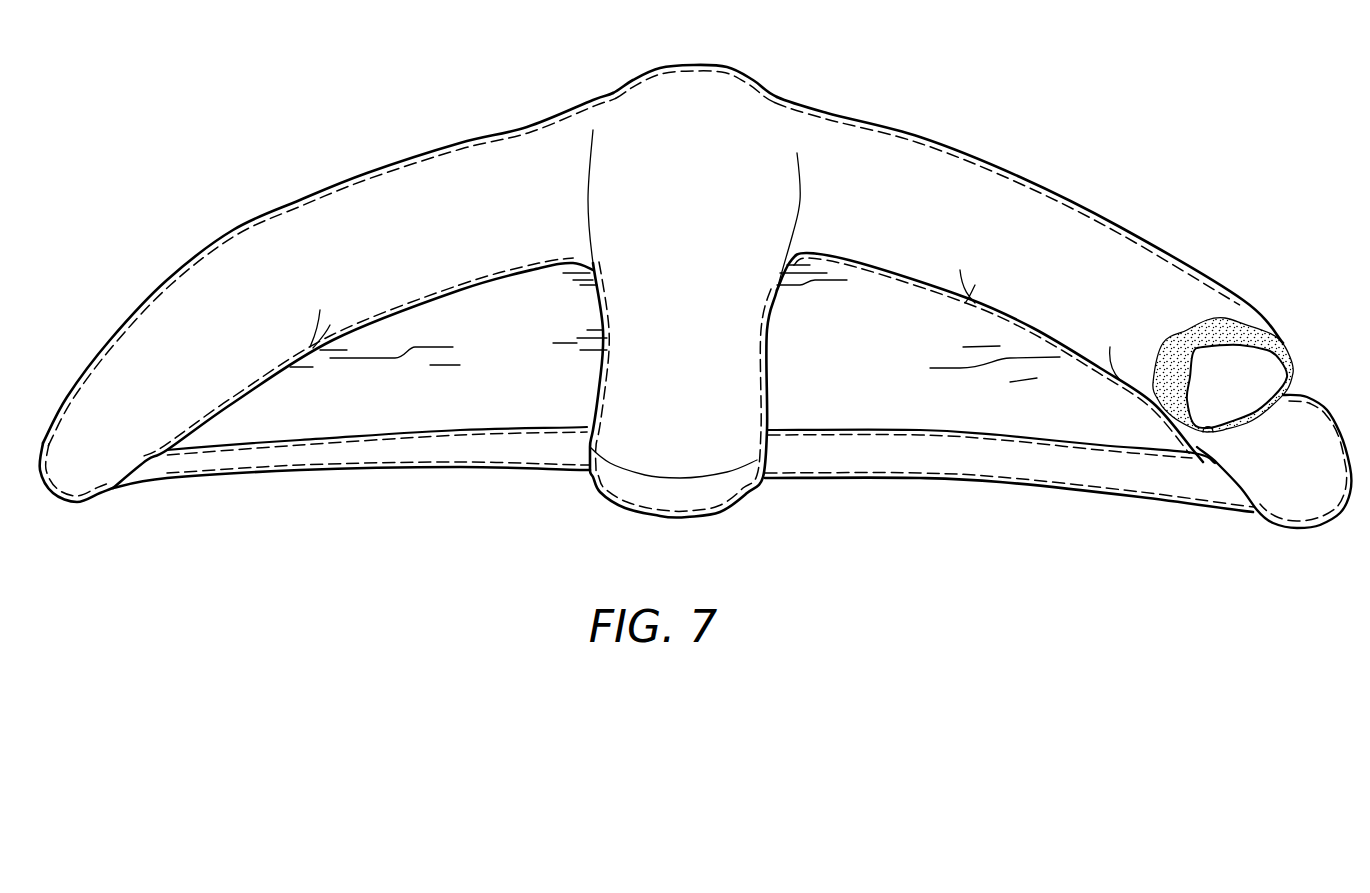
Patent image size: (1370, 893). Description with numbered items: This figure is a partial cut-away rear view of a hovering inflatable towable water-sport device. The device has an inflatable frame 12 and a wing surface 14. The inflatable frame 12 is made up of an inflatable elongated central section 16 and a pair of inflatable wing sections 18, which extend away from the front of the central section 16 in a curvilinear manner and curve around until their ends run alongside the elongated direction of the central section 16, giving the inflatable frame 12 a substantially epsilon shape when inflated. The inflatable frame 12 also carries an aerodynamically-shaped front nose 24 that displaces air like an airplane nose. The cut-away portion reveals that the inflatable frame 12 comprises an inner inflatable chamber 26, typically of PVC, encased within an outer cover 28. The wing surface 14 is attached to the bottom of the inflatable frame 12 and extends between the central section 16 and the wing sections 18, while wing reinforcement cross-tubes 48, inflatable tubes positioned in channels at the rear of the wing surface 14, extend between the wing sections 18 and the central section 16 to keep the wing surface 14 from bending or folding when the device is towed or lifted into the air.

The inflatable frame 12 is at (848, 140).
The wing surface 14 is at (457, 407).
The inflatable elongated central section 16 is at (670, 407).
The inflatable wing sections 18 is at (362, 220).
The front nose 24 is at (693, 83).
The inflatable chamber 26 is at (1293, 357).
The outer cover 28 is at (1245, 327).
The wing reinforcement cross-tubes 48 is at (293, 470).